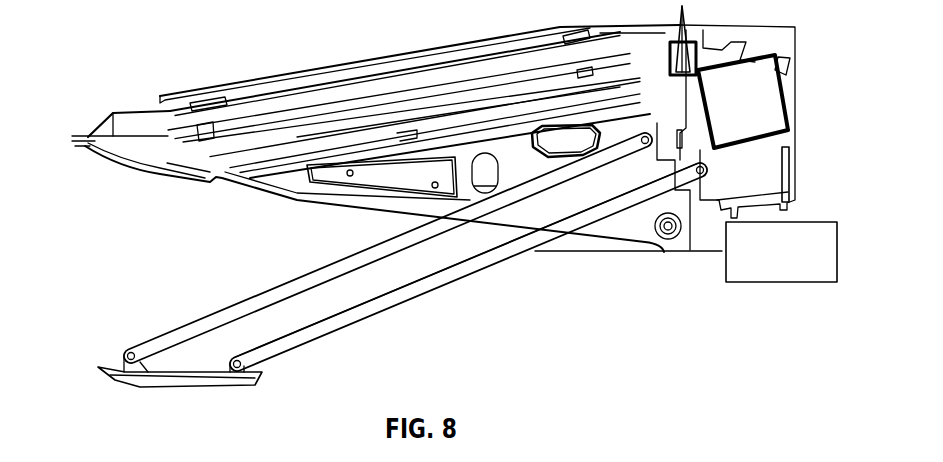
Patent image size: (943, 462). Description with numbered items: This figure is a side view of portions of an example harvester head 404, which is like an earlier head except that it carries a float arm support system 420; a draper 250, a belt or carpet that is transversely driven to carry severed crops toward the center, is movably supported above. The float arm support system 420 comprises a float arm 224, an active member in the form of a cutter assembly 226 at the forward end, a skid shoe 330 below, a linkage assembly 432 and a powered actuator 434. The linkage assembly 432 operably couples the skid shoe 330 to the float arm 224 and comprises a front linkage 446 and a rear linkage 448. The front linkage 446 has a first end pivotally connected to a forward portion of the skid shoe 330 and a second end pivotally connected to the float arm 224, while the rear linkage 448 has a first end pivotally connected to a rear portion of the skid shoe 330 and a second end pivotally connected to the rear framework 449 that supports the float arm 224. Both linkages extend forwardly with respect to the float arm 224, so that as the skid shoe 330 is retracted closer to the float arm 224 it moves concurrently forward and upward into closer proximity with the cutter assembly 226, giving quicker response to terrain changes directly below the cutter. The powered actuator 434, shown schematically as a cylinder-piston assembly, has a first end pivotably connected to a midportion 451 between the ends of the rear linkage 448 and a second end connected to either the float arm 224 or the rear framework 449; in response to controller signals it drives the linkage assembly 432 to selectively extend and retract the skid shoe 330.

The harvester head 404 is at (438, 215).
The draper 250 is at (430, 48).
The cutter assembly 226 is at (83, 133).
The float arm 224 is at (337, 184).
The rear framework 449 is at (792, 160).
The float arm support system 420 is at (535, 255).
The linkage assembly 432 is at (415, 252).
The front linkage 446 is at (297, 275).
The rear linkage 448 is at (333, 332).
The midportion 451 is at (402, 297).
The skid shoe 330 is at (188, 390).
The powered actuator 434 is at (783, 284).